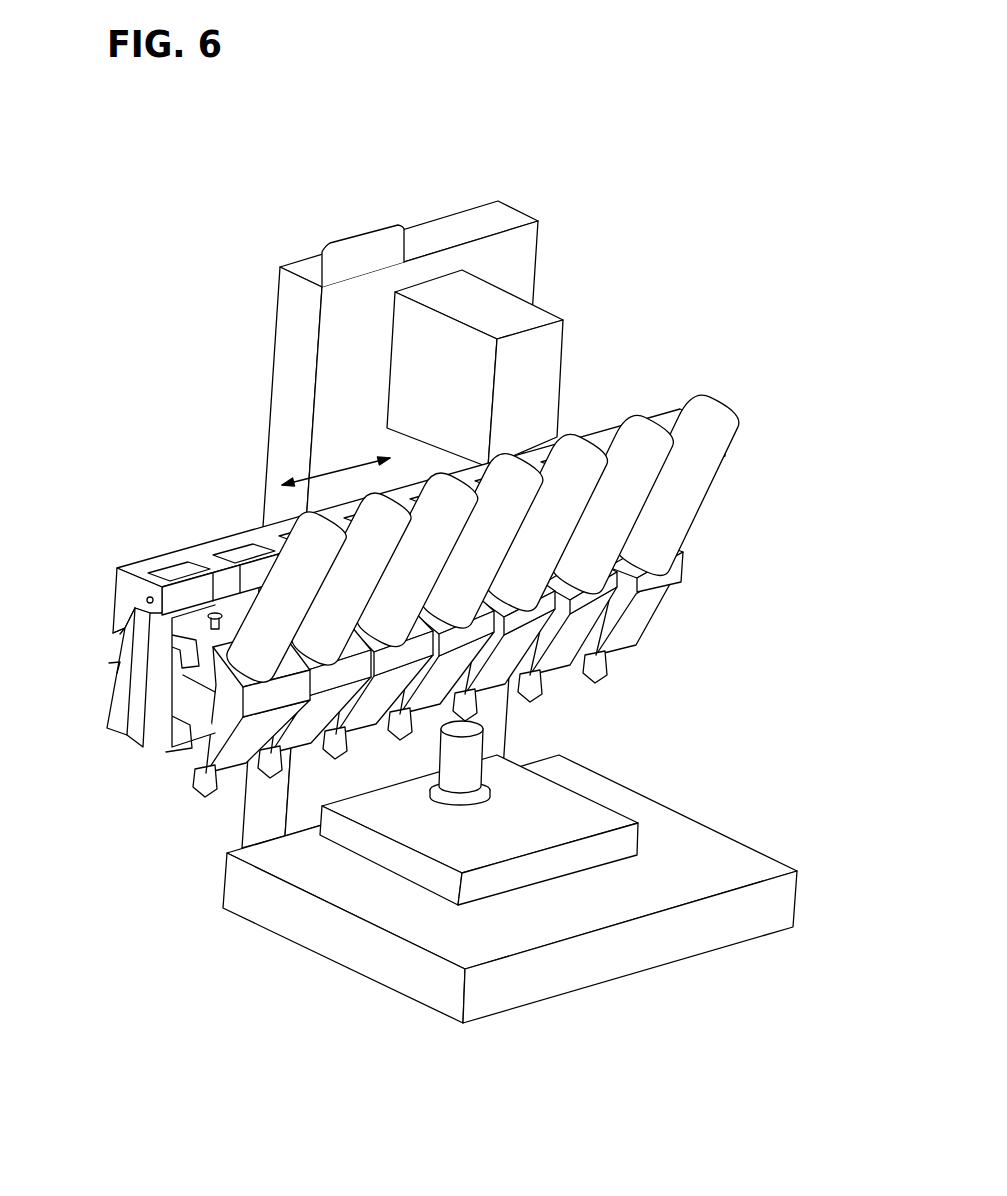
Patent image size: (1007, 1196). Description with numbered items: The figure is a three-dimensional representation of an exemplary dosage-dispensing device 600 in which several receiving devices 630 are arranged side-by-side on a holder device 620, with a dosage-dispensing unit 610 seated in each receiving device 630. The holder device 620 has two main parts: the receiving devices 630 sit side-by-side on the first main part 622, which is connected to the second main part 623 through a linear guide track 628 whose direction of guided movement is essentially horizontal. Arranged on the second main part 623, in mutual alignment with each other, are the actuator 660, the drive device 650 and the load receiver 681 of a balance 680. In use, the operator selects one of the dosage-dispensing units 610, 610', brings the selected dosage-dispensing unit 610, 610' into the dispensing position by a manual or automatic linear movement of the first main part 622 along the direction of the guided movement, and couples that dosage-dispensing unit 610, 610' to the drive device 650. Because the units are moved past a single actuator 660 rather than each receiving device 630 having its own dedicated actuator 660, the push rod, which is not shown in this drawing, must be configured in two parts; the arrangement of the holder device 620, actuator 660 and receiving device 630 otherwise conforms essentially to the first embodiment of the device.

The dosage-dispensing device 600 is at (645, 232).
The dosage-dispensing unit 610 is at (725, 525).
The dosage-dispensing unit 610' is at (696, 555).
The holder device 620 is at (232, 494).
The first main part 622 is at (205, 557).
The second main part 623 is at (355, 363).
The linear guide track 628 is at (115, 667).
The receiving device 630 is at (183, 573).
The drive device 650 is at (519, 380).
The actuator 660 is at (367, 235).
The balance 680 is at (545, 822).
The load receiver 681 is at (485, 787).